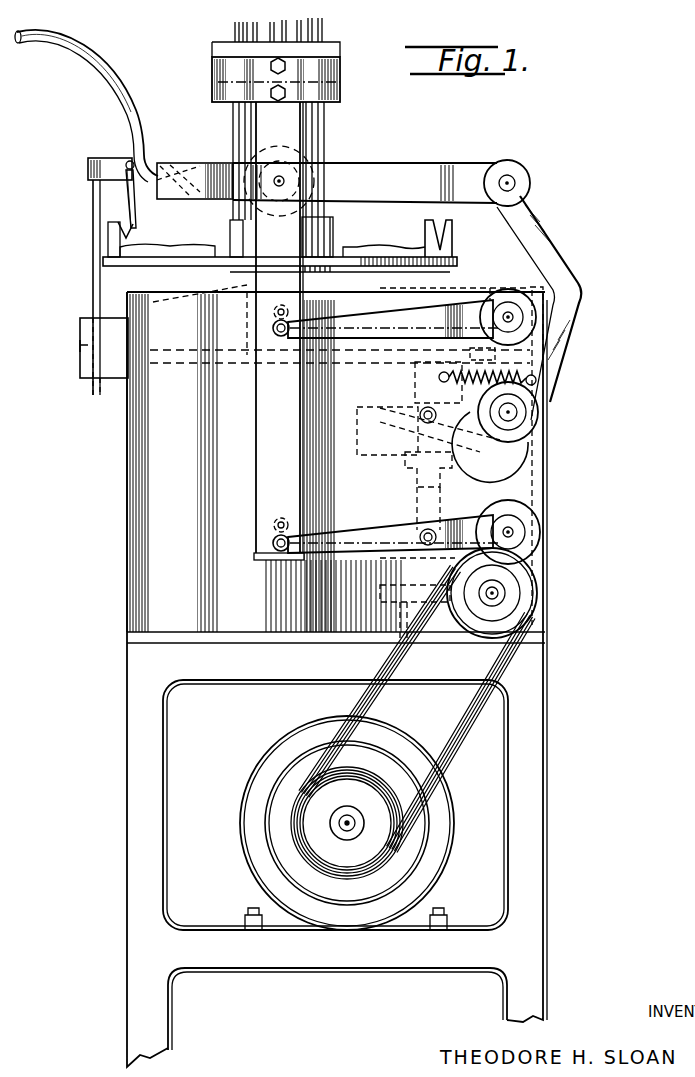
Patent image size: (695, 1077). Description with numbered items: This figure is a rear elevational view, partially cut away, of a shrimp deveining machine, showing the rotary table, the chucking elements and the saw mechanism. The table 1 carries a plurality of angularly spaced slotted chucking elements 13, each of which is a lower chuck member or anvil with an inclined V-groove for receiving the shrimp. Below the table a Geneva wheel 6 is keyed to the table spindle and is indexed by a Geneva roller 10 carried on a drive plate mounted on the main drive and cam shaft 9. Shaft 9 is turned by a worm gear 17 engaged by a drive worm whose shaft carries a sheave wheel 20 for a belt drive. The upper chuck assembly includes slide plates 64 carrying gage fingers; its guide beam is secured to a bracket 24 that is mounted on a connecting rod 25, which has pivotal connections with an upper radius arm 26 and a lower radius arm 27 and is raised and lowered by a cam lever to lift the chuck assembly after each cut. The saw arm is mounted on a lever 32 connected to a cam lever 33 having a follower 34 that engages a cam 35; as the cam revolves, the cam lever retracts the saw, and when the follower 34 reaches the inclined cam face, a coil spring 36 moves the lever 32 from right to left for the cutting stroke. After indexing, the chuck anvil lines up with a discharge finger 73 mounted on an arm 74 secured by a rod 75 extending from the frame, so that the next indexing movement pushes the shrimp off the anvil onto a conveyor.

The table 1 is at (455, 260).
The Geneva wheel 6 is at (170, 368).
The main drive and cam shaft 9 is at (441, 486).
The Geneva roller 10 is at (495, 356).
The chucking element 13 is at (448, 240).
The worm gear 17 is at (396, 590).
The sheave wheel 20 is at (527, 594).
The bracket 24 is at (340, 86).
The connecting rod 25 is at (300, 135).
The upper radius arm 26 is at (400, 320).
The lower radius arm 27 is at (393, 535).
The lever 32 is at (555, 250).
The cam lever 33 is at (418, 390).
The follower 34 is at (420, 412).
The cam 35 is at (363, 408).
The coil spring 36 is at (546, 396).
The slide plate 64 is at (310, 150).
The discharge finger 73 is at (133, 214).
The arm 74 is at (118, 158).
The rod 75 is at (97, 268).